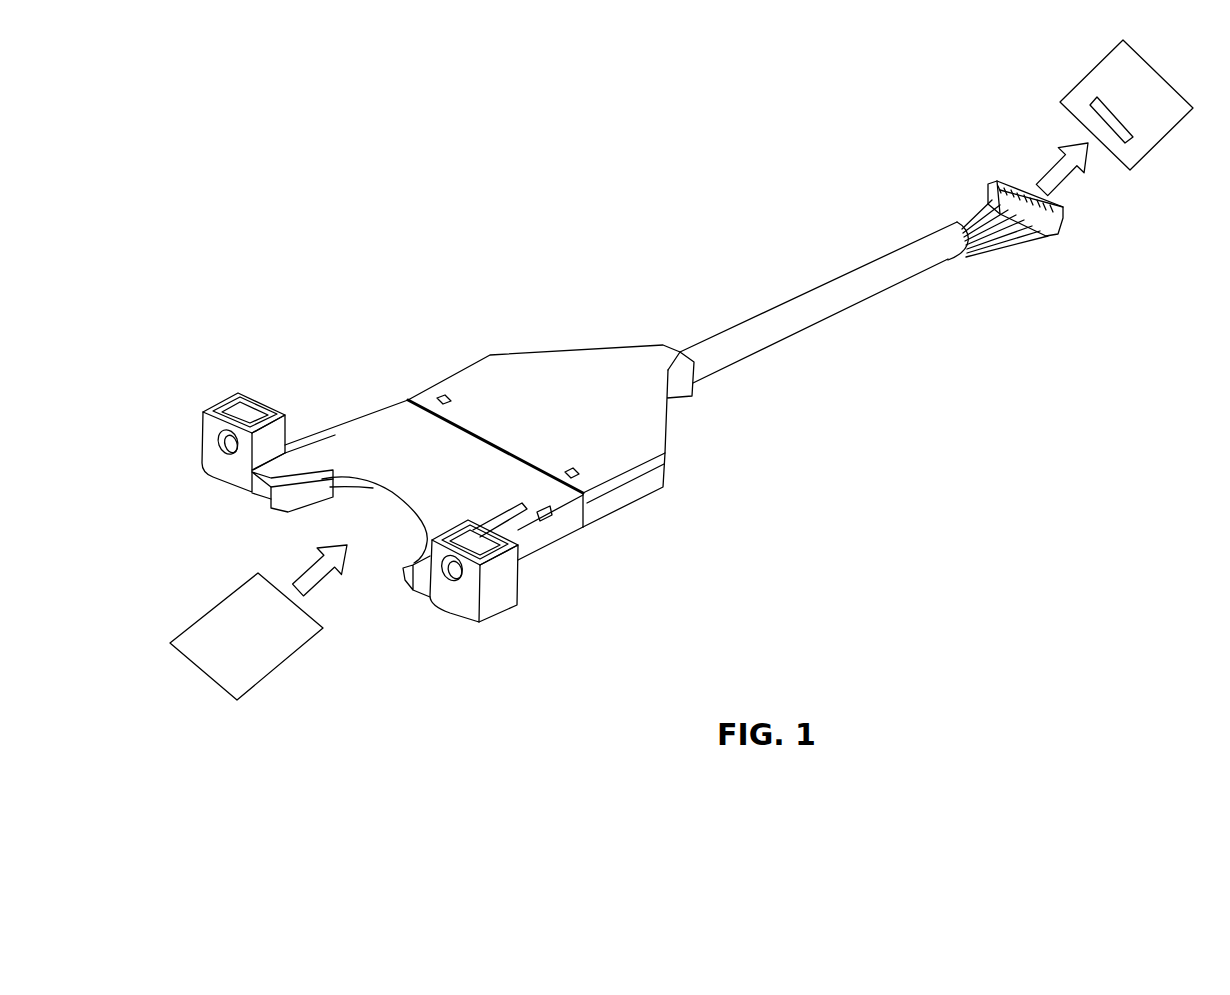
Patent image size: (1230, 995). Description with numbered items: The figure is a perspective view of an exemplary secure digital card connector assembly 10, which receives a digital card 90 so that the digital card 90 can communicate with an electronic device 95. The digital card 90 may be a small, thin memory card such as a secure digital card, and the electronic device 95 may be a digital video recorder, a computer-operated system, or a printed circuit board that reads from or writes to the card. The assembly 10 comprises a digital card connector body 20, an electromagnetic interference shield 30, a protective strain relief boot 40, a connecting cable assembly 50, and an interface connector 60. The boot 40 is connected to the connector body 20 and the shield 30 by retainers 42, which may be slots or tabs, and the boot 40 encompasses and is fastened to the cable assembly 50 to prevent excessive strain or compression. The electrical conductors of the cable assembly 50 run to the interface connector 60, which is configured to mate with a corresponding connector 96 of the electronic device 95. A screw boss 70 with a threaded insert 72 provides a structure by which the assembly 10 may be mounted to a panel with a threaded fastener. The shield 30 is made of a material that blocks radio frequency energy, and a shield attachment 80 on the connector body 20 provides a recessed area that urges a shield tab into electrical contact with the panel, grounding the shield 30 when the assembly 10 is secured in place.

The secure digital card connector assembly 10 is at (560, 284).
The digital card connector body 20 is at (360, 570).
The electromagnetic interference shield 30 is at (447, 459).
The strain relief boot 40 is at (584, 432).
The retainer 42 is at (582, 477).
The connecting cable assembly 50 is at (886, 276).
The interface connector 60 is at (977, 205).
The screw boss 70 is at (210, 406).
The threaded insert 72 is at (266, 402).
The shield attachment 80 is at (260, 494).
The digital card 90 is at (228, 680).
The electronic device 95 is at (1166, 62).
The corresponding connector 96 is at (1122, 99).